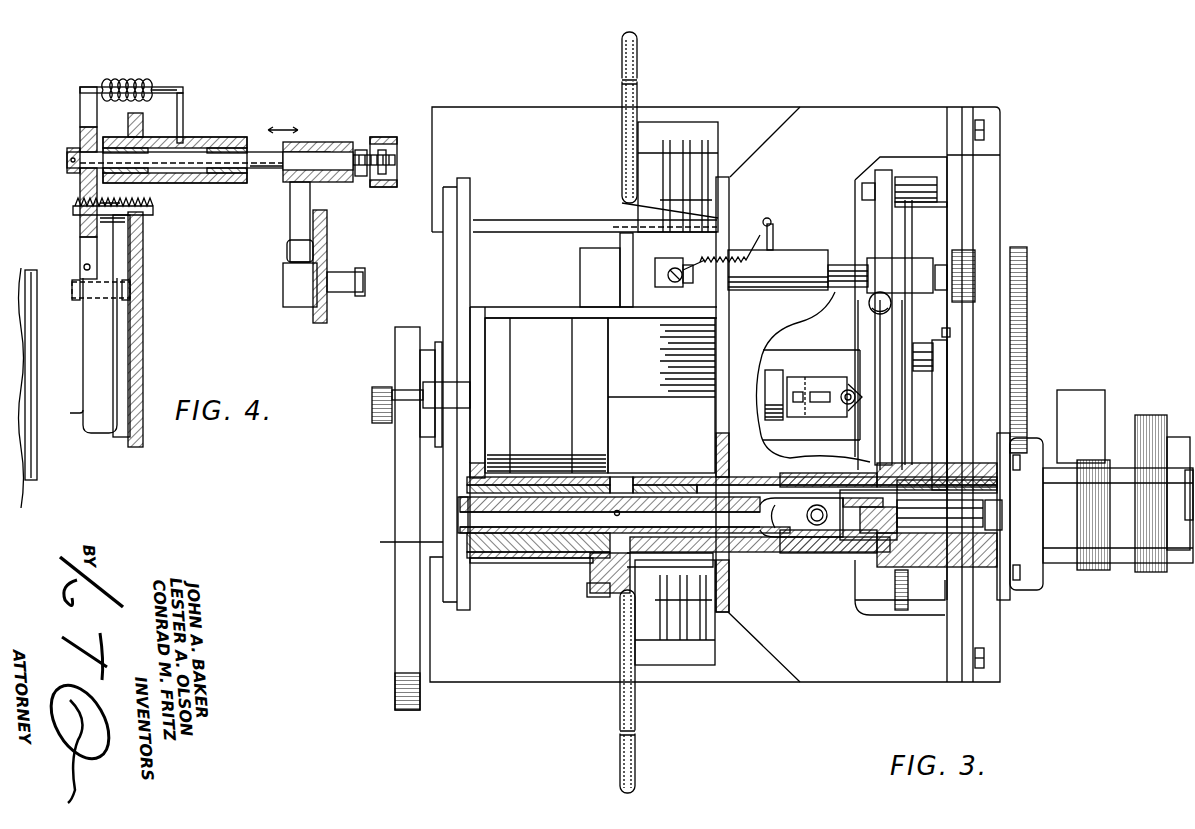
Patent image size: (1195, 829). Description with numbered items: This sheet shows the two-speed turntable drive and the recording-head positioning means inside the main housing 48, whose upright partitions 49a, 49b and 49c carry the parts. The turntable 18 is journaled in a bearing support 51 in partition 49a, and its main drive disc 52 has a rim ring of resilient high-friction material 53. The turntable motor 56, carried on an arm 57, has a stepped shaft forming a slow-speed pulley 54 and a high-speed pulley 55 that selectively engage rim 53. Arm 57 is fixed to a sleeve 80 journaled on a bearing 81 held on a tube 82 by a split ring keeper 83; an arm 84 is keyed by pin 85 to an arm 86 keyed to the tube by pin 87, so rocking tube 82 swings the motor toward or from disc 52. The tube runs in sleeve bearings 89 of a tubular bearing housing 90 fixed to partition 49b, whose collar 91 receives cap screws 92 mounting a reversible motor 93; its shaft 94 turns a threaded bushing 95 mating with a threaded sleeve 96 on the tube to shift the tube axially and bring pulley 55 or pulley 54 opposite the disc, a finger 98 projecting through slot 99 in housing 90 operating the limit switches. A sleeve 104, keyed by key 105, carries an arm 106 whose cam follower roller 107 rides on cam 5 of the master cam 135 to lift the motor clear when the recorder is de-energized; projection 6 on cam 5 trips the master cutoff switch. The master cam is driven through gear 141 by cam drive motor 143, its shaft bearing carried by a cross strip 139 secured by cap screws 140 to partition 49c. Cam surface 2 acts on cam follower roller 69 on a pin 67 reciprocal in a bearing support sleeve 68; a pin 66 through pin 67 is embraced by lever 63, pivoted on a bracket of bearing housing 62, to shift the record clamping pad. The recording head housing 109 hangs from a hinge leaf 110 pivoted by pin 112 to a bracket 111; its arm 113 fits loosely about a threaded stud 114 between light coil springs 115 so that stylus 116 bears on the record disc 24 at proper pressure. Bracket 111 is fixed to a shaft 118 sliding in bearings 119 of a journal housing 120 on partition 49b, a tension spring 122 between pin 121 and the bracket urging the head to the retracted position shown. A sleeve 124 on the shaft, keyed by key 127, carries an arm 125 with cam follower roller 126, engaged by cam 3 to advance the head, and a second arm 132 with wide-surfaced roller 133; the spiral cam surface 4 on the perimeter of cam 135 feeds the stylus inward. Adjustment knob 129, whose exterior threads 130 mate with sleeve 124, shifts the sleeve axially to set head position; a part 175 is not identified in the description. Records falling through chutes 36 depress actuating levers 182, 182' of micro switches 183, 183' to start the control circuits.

In FIG. 3, the cam surface 2 is at (860, 320).
In FIG. 3, the cam 3 is at (858, 205).
In FIG. 3, the cam surface 4 is at (903, 210).
In FIG. 3, the cam 5 is at (912, 392).
In FIG. 3, the projection 6 is at (950, 330).
In FIG. 4, the turntable 18 is at (22, 498).
In FIG. 3, the turntable 18 is at (572, 256).
In FIG. 4, the record disc 24 is at (40, 466).
In FIG. 3, the chute 36 is at (638, 48).
In FIG. 3, the main housing 48 is at (530, 105).
In FIG. 3, the transverse partition 49a is at (471, 185).
In FIG. 4, the transverse partition 49b is at (143, 337).
In FIG. 3, the transverse partition 49b is at (730, 185).
In FIG. 3, the transverse partition 49c is at (947, 108).
In FIG. 3, the bearing support 51 is at (396, 542).
In FIG. 3, the main drive disc 52 is at (395, 502).
In FIG. 3, the ring of resilient high friction material 53 is at (395, 592).
In FIG. 3, the slow speed driving pulley 54 is at (372, 390).
In FIG. 3, the high speed driving pulley 55 is at (433, 405).
In FIG. 3, the turntable motor 56 is at (593, 390).
In FIG. 3, the arm 57 is at (470, 470).
In FIG. 3, the tubular bearing housing 62 is at (795, 350).
In FIG. 3, the lever 63 is at (830, 405).
In FIG. 3, the pin 66 is at (805, 408).
In FIG. 3, the pin 67 is at (802, 380).
In FIG. 3, the bearing support sleeve 68 is at (770, 372).
In FIG. 3, the cam follower roller 69 is at (850, 390).
In FIG. 3, the sleeve 80 is at (505, 550).
In FIG. 3, the bearing 81 is at (545, 550).
In FIG. 3, the tube 82 is at (548, 527).
In FIG. 3, the split ring keeper 83 is at (470, 521).
In FIG. 3, the arm 84 is at (595, 597).
In FIG. 3, the pin 85 is at (590, 575).
In FIG. 3, the arm 86 is at (615, 565).
In FIG. 3, the transverse pin 87 is at (620, 513).
In FIG. 3, the sleeve bearing 89 is at (858, 468).
In FIG. 3, the tubular bearing housing 90 is at (800, 548).
In FIG. 3, the radial flange 91 is at (983, 605).
In FIG. 3, the cap screw 92 is at (1015, 590).
In FIG. 3, the reversible electric motor 93 is at (1092, 575).
In FIG. 3, the motor shaft 94 is at (1002, 515).
In FIG. 3, the threaded bushing 95 is at (840, 550).
In FIG. 3, the threaded sleeve 96 is at (870, 560).
In FIG. 3, the finger 98 is at (815, 505).
In FIG. 3, the elongated slot 99 is at (660, 478).
In FIG. 3, the sleeve 104 is at (926, 570).
In FIG. 3, the key 105 is at (990, 487).
In FIG. 3, the arm 106 is at (937, 425).
In FIG. 3, the cam follower roller 107 is at (925, 343).
In FIG. 4, the recording head housing 109 is at (93, 352).
In FIG. 3, the recording head housing 109 is at (665, 262).
In FIG. 4, the hinge leaf 110 is at (74, 296).
In FIG. 4, the bracket 111 is at (80, 222).
In FIG. 3, the bracket 111 is at (670, 290).
In FIG. 4, the pin 112 is at (84, 265).
In FIG. 4, the arm 113 is at (130, 264).
In FIG. 4, the threaded stud 114 is at (153, 208).
In FIG. 4, the coil spring 115 is at (107, 216).
In FIG. 4, the stylus 116 is at (70, 414).
In FIG. 4, the shaft 118 is at (262, 152).
In FIG. 3, the shaft 118 is at (840, 266).
In FIG. 4, the bearing 119 is at (110, 147).
In FIG. 4, the journal housing 120 is at (170, 183).
In FIG. 3, the journal housing 120 is at (778, 270).
In FIG. 4, the pin 121 is at (183, 100).
In FIG. 3, the pin 121 is at (773, 225).
In FIG. 4, the tension spring 122 is at (128, 84).
In FIG. 3, the tension spring 122 is at (740, 240).
In FIG. 4, the sleeve 124 is at (310, 142).
In FIG. 3, the sleeve 124 is at (922, 265).
In FIG. 4, the arm 125 is at (290, 224).
In FIG. 4, the cam follower roller 126 is at (287, 250).
In FIG. 3, the cam follower roller 126 is at (878, 318).
In FIG. 4, the key 127 is at (266, 170).
In FIG. 4, the adjustment knob 129 is at (385, 138).
In FIG. 3, the adjustment knob 129 is at (975, 255).
In FIG. 4, the exterior threads 130 is at (360, 150).
In FIG. 3, the second arm 132 is at (882, 170).
In FIG. 3, the cam follower roller 133 is at (918, 178).
In FIG. 3, the master cam 135 is at (885, 621).
In FIG. 3, the cross strip 139 is at (962, 167).
In FIG. 3, the cap screw 140 is at (985, 130).
In FIG. 3, the gear 141 is at (1030, 325).
In FIG. 3, the cam drive motor 143 is at (1148, 415).
In FIG. 3, the block 175 is at (880, 295).
In FIG. 3, the actuating lever 182 is at (595, 217).
In FIG. 3, the actuator 182' is at (699, 571).
In FIG. 3, the micro switch 183 is at (670, 151).
In FIG. 3, the micro switch 183' is at (675, 636).